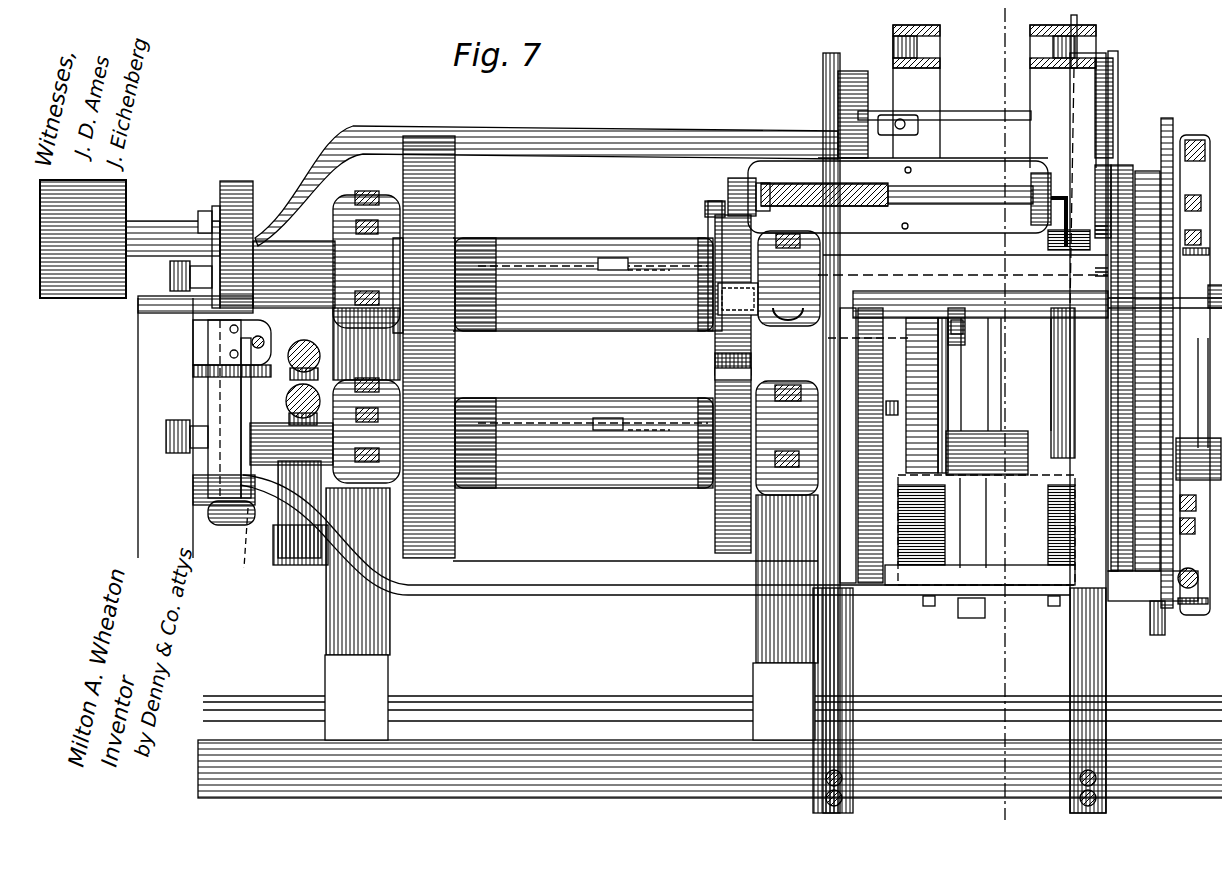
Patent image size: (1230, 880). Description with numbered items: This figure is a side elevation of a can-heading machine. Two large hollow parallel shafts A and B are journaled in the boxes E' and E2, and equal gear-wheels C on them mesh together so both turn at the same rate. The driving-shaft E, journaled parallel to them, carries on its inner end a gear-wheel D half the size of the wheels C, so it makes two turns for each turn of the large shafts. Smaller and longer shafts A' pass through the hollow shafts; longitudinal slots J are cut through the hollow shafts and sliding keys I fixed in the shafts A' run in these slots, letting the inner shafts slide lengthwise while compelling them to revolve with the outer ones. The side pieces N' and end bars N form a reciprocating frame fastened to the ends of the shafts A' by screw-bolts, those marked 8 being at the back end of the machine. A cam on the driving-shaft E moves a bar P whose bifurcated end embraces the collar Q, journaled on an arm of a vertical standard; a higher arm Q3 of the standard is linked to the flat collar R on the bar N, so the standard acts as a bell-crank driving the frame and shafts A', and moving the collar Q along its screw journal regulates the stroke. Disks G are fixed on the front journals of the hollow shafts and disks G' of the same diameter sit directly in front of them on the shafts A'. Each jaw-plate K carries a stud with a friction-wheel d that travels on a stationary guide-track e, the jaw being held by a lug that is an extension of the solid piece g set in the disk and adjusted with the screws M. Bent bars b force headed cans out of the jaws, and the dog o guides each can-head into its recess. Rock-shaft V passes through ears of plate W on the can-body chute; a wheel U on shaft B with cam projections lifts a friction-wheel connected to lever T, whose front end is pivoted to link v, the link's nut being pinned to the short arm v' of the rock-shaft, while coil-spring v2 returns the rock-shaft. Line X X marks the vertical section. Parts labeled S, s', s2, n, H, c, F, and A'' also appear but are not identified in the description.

The driving-shaft E is at (130, 239).
The dog o is at (226, 180).
The screw-bolts 8 is at (181, 357).
The small shafts A' is at (645, 373).
The boxes E2 is at (330, 212).
The gear-wheel D is at (425, 130).
The side pieces N' is at (655, 365).
The hollow shaft A is at (584, 276).
The sliding keys I is at (598, 250).
The longitudinal slots J is at (632, 260).
The hollow shaft B is at (518, 412).
The gear-wheels C is at (448, 215).
The lever T is at (736, 384).
The pulley-shaped wheel U is at (708, 350).
The link v is at (706, 266).
The short arm v' is at (736, 197).
The coil-spring v2 is at (786, 180).
The plate W is at (960, 160).
The rock-shaft V is at (935, 178).
The boxes E' is at (930, 485).
The flat collar R is at (210, 340).
The end bars N is at (696, 375).
The arm Q3 is at (280, 385).
The bar P is at (222, 508).
The collar Q is at (284, 521).
The disks G is at (841, 433).
The screws M is at (848, 513).
The disks G' is at (1134, 433).
The guide block S is at (890, 42).
The pin s' is at (1086, 158).
The stud s2 is at (1100, 115).
The section line X is at (1008, 417).
The guide-track e is at (1145, 188).
The friction-wheels d is at (1150, 228).
The spring n is at (1099, 246).
The carriage H is at (915, 300).
The bent pieces b is at (985, 405).
The guide c is at (950, 467).
The solid piece g is at (878, 405).
The plates K is at (860, 455).
The frame plate F is at (1098, 690).
The shaft A'' is at (1045, 323).